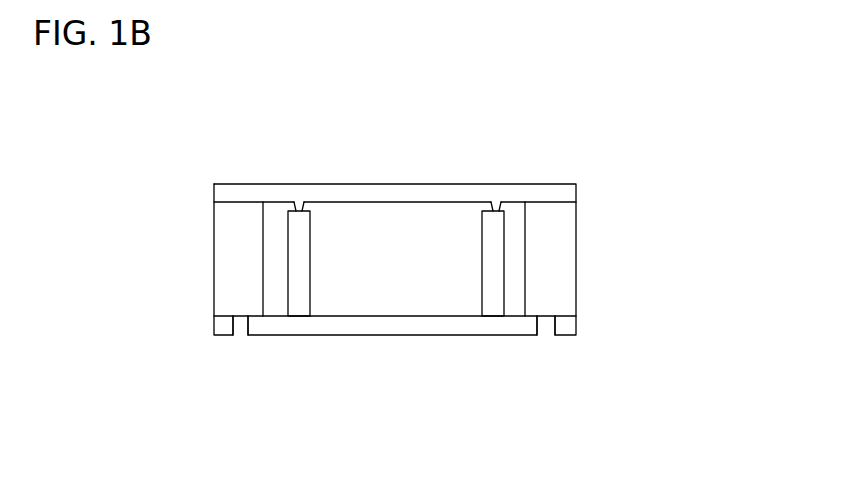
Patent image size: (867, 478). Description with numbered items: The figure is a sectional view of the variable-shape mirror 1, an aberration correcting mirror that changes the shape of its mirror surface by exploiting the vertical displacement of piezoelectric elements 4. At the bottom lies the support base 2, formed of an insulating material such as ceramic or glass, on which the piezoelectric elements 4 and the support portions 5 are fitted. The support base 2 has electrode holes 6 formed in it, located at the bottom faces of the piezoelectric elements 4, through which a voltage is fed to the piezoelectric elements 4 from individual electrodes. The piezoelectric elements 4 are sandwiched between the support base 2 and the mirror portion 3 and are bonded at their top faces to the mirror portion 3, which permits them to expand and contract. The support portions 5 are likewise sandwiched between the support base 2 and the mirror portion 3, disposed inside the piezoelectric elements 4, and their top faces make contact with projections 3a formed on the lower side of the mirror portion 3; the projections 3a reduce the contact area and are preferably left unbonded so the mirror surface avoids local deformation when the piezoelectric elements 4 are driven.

The variable-shape mirror 1 is at (617, 138).
The support base 2 is at (527, 330).
The mirror portion 3 is at (523, 192).
The projections 3a is at (491, 203).
The piezoelectric elements 4 is at (243, 292).
The support portions 5 is at (504, 226).
The electrode holes 6 is at (242, 327).